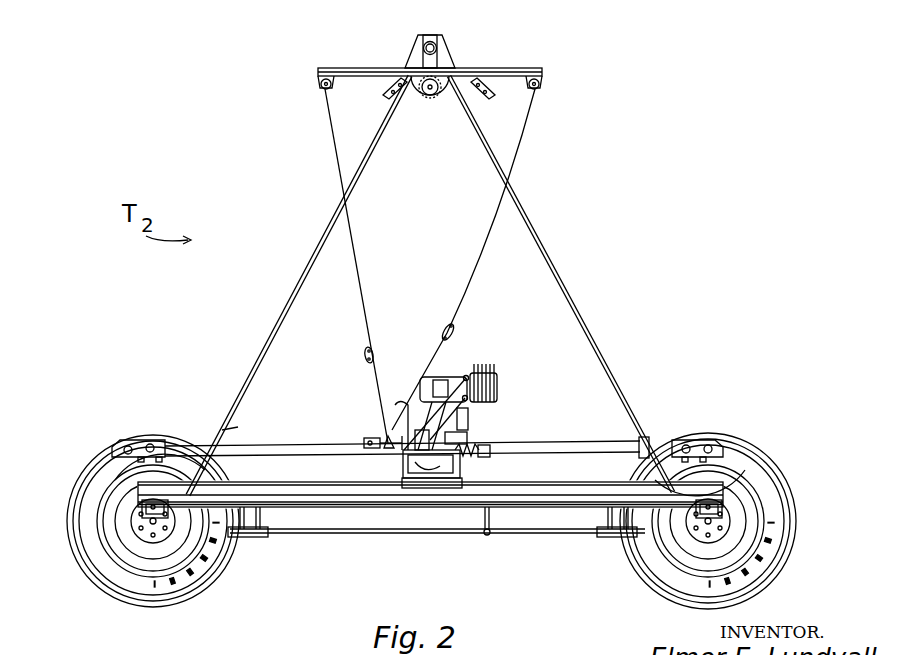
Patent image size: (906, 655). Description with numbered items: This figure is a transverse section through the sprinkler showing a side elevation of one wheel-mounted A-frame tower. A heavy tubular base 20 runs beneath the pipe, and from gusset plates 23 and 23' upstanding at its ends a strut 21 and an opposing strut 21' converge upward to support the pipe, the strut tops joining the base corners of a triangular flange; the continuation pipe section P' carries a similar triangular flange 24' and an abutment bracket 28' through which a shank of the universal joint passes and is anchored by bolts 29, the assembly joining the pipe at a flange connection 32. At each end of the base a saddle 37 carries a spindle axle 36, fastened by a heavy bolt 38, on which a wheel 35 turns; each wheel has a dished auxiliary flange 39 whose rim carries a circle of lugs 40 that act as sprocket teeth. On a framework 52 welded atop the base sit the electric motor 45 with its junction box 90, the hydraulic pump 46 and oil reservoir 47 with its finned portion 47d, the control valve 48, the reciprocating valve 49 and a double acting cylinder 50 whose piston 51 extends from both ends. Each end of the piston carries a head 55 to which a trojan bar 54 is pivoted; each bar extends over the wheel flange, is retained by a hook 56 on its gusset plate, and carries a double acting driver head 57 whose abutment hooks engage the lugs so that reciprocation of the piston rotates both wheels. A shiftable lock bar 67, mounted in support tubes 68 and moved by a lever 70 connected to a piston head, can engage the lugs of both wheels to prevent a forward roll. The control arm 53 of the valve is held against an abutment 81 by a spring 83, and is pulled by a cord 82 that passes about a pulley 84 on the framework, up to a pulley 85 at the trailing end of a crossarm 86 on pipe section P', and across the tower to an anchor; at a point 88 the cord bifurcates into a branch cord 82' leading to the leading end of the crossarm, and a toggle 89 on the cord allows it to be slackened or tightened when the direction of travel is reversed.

The tubular base 20 is at (336, 492).
The strut 21 is at (299, 285).
The strut 21' is at (560, 284).
The gusset plate 23 is at (189, 469).
The gusset plate 23' is at (669, 475).
The triangular flange 24' is at (457, 51).
The abutment bracket 28' is at (454, 39).
The bolt 29 is at (428, 38).
The flange connection 32 is at (446, 95).
The pipe section P' is at (440, 111).
The wheel 35 is at (80, 482).
The spindle axle 36 is at (165, 536).
The saddle 37 is at (125, 522).
The heavy bolt 38 is at (96, 545).
The auxiliary flange 39 is at (125, 563).
The lugs 40 is at (148, 590).
The electric motor 45 is at (441, 376).
The hydraulic pump 46 is at (470, 376).
The oil reservoir 47 is at (498, 385).
The cylinder fins 47d is at (497, 368).
The control valve 48 is at (425, 483).
The reciprocating valve 49 is at (470, 438).
The double acting cylinder 50 is at (400, 426).
The piston 51 is at (362, 440).
The framework 52 is at (410, 490).
The control arm 53 is at (470, 460).
The trojan bar 54 is at (288, 445).
The head 55 is at (368, 449).
The hook 56 is at (228, 424).
The double acting driver head 57 is at (142, 440).
The lock bar 67 is at (298, 536).
The support tube 68 is at (240, 538).
The lever 70 is at (485, 536).
The abutment 81 is at (470, 480).
The cord 82 is at (353, 266).
The branch cord 82' is at (463, 259).
The spring 83 is at (495, 452).
The pulley 84 is at (400, 455).
The pulley 85 is at (321, 84).
The crossarm 86 is at (364, 68).
The bifurcation point 88 is at (394, 406).
The toggle 89 is at (365, 356).
The junction box 90 is at (470, 418).